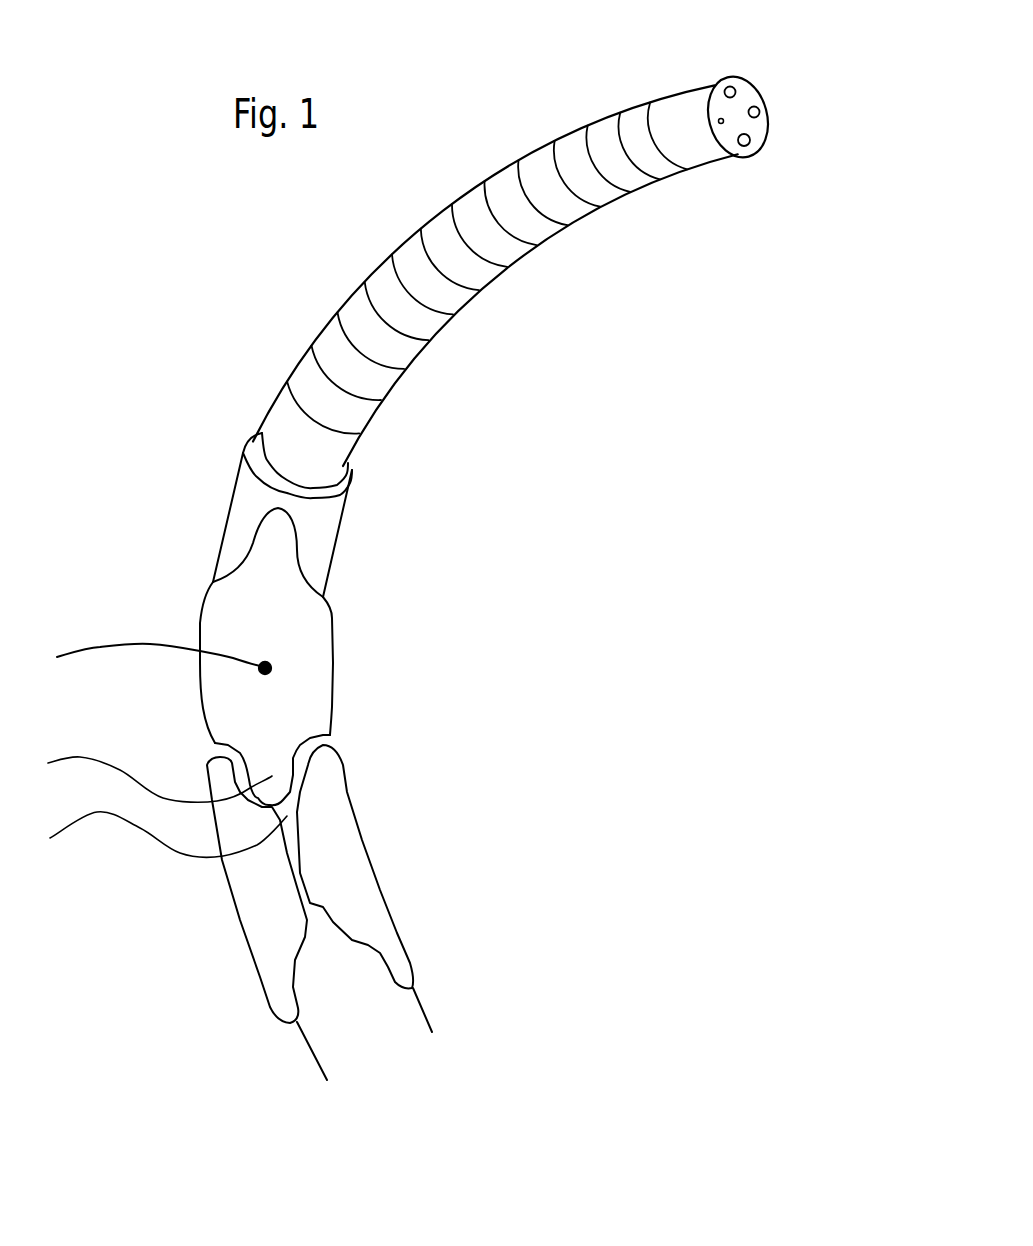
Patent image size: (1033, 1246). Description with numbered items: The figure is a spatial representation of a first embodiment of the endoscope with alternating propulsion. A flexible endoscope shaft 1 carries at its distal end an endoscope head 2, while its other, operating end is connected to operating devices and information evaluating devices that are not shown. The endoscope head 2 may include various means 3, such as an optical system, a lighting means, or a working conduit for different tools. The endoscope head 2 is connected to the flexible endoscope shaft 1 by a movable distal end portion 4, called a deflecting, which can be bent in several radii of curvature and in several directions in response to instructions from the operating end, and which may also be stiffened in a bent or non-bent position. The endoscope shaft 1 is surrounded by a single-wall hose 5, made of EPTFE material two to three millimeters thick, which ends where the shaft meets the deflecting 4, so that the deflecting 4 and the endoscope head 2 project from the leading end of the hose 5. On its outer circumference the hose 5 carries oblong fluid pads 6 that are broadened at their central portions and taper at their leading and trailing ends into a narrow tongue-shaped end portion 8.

The flexible endoscope shaft 1 is at (292, 420).
The endoscope head 2 is at (698, 150).
The means 3 is at (734, 88).
The movable distal end portion 4 is at (467, 267).
The hose 5 is at (313, 552).
The fluid pads 6 is at (328, 651).
The tongue-shaped end portion 8 is at (270, 552).